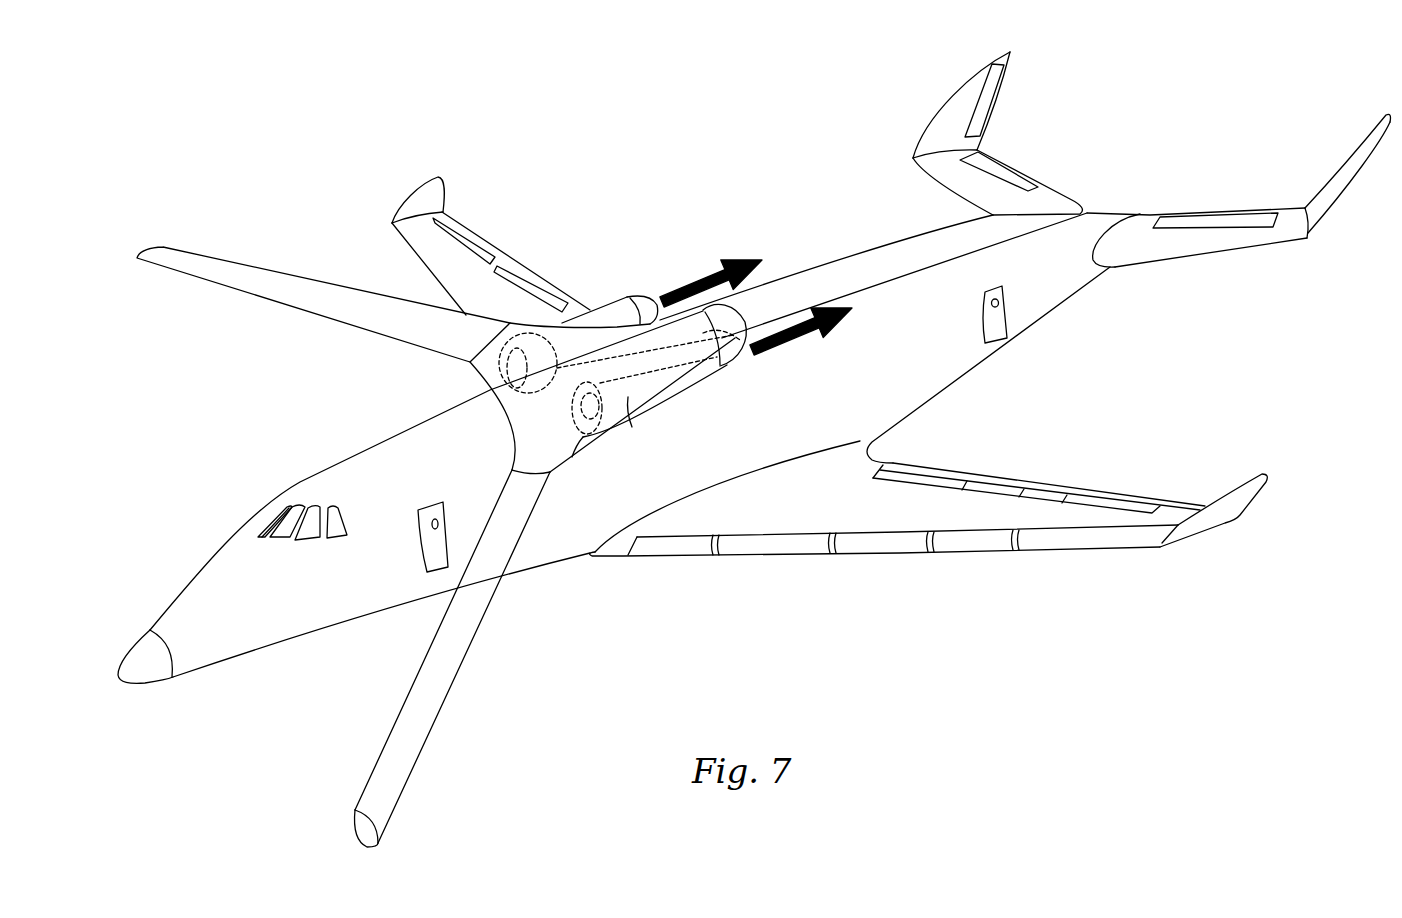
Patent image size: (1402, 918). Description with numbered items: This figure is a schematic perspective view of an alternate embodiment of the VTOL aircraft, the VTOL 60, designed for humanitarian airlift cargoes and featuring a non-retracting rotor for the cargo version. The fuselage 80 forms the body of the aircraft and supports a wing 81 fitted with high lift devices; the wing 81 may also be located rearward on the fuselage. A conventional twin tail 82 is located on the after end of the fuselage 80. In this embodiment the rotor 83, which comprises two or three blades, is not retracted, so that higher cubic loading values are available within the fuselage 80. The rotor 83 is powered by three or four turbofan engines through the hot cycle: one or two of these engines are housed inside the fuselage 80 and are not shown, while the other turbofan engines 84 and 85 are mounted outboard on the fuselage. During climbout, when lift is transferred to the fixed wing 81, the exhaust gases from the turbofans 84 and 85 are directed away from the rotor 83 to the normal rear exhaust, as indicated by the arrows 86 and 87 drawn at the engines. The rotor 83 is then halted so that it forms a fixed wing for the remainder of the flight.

The VTOL aircraft 60 is at (180, 156).
The fuselage 80 is at (382, 470).
The wing 81 is at (823, 498).
The twin tail 82 is at (970, 100).
The rotor 83 is at (287, 287).
The turbofan engine 84 is at (655, 420).
The turbofan engine 85 is at (610, 312).
The arrow 86 is at (780, 345).
The arrow 87 is at (695, 290).